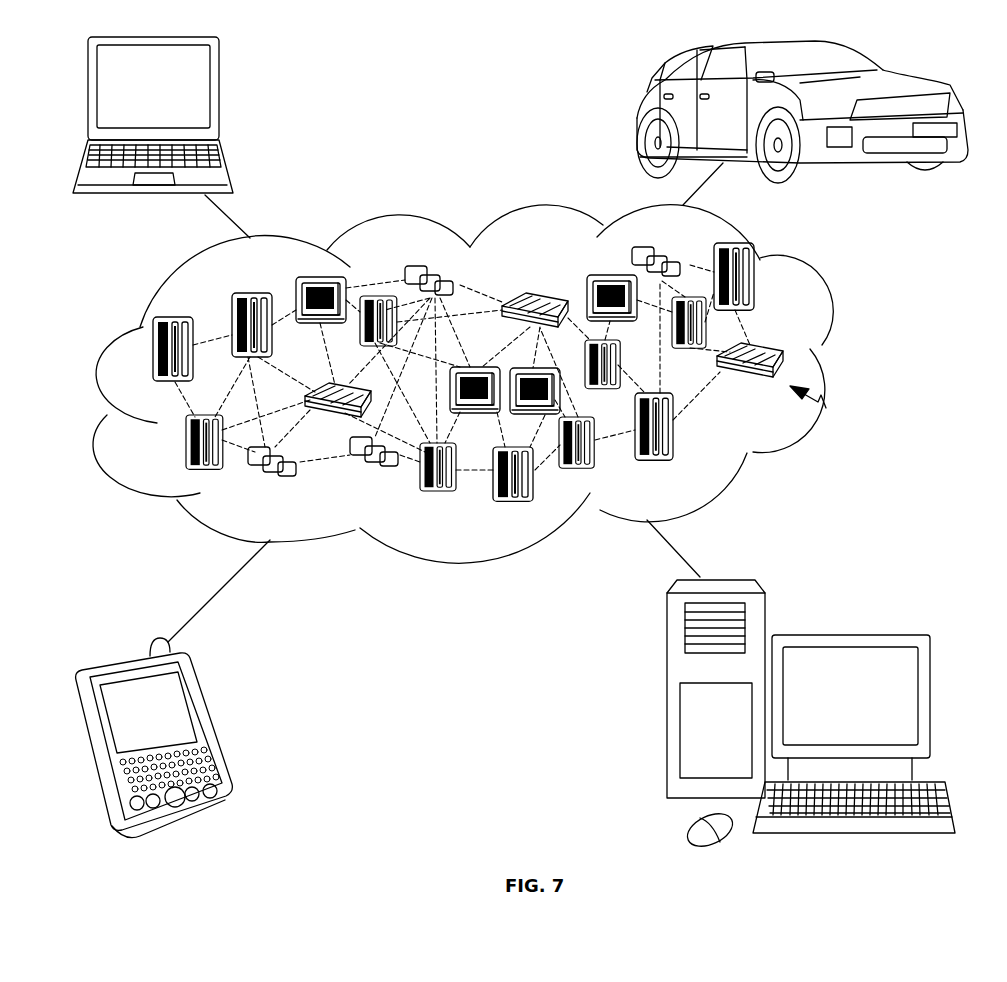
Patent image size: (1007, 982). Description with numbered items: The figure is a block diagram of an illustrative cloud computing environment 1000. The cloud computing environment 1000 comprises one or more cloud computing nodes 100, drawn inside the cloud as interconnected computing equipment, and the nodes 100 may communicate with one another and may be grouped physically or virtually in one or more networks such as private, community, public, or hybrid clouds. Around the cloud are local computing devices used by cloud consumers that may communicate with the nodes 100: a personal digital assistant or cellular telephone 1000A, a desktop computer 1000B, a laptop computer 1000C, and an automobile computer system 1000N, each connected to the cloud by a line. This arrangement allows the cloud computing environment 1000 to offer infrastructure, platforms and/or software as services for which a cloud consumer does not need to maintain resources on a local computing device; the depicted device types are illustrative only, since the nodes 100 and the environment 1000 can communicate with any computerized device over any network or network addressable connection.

The cloud computing environment 1000 is at (848, 357).
The cloud computing nodes 100 is at (826, 406).
The personal digital assistant (PDA) or cellular telephone 1000A is at (210, 725).
The desktop computer 1000B is at (847, 632).
The laptop computer 1000C is at (221, 98).
The automobile computer system 1000N is at (637, 117).